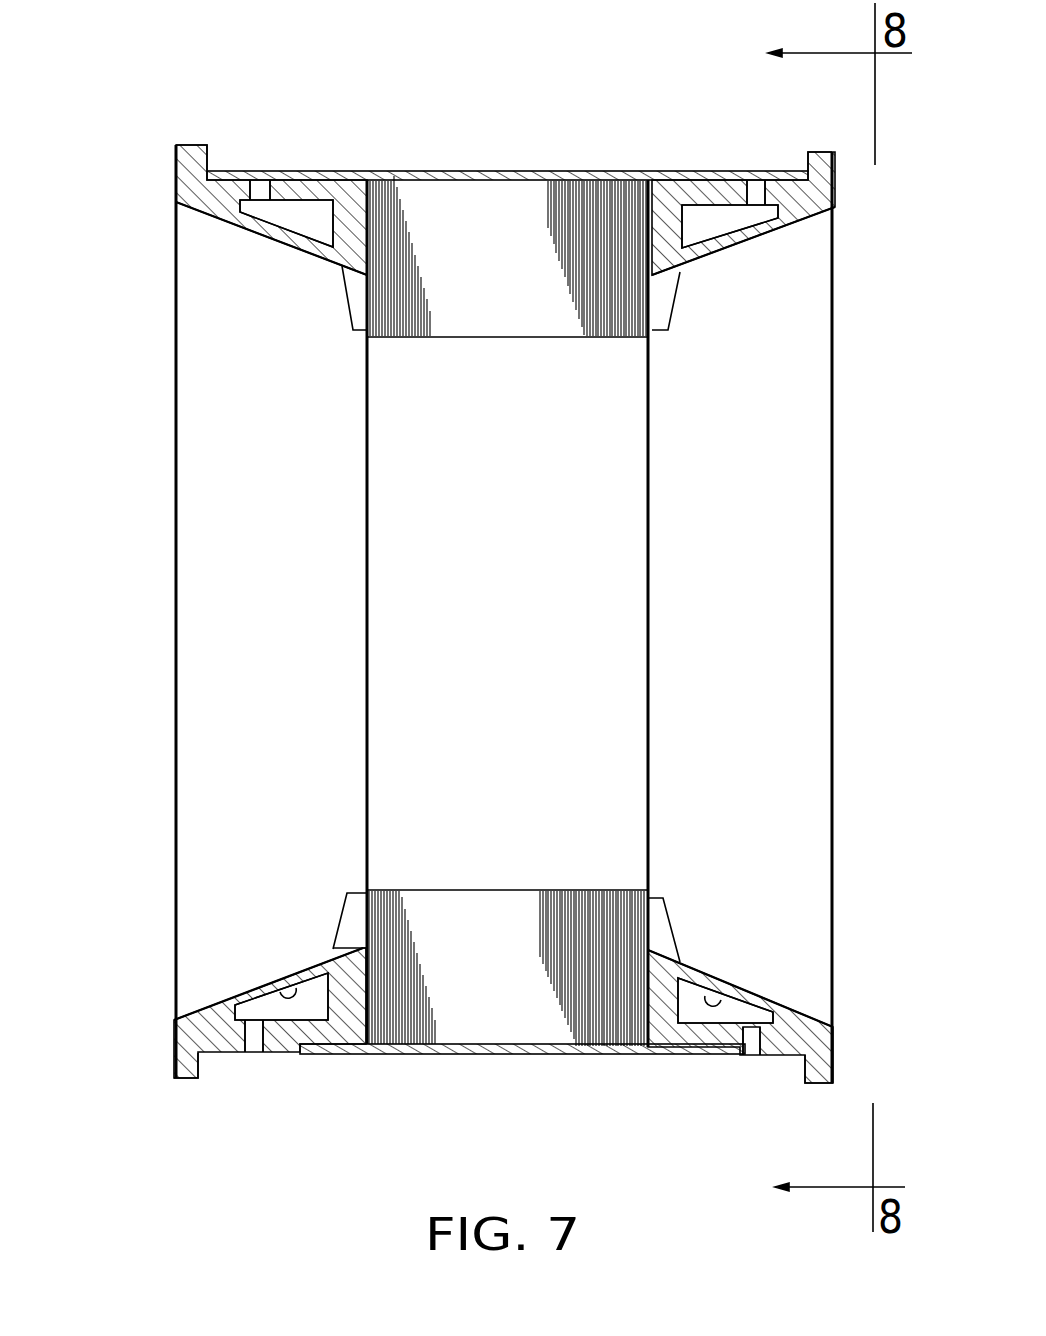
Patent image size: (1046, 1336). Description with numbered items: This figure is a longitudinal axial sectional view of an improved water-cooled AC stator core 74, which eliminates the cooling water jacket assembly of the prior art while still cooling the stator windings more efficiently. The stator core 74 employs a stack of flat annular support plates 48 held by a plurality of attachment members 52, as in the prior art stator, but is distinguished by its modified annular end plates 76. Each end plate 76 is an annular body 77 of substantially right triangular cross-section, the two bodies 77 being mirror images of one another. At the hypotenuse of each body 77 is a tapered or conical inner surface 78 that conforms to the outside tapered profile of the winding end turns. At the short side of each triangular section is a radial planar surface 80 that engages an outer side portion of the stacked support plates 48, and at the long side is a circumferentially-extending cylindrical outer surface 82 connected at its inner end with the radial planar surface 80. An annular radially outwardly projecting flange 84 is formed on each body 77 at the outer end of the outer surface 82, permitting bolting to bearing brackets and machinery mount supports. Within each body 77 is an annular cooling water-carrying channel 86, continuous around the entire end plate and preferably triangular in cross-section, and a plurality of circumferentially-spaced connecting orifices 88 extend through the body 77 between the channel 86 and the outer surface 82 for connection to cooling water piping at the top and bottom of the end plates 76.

The flat annular support plates 48 is at (528, 1020).
The attachment members 52 is at (512, 170).
The AC stator core 74 is at (158, 419).
The annular end plates 76 is at (848, 432).
The annular bodies 77 is at (227, 1043).
The inner surfaces 78 is at (205, 1005).
The radial planar surfaces 80 is at (365, 985).
The cylindrical outer surfaces 82 is at (278, 1053).
The flange 84 is at (172, 1065).
The cooling water-carrying channel 86 is at (300, 972).
The connecting orifices 88 is at (255, 1015).